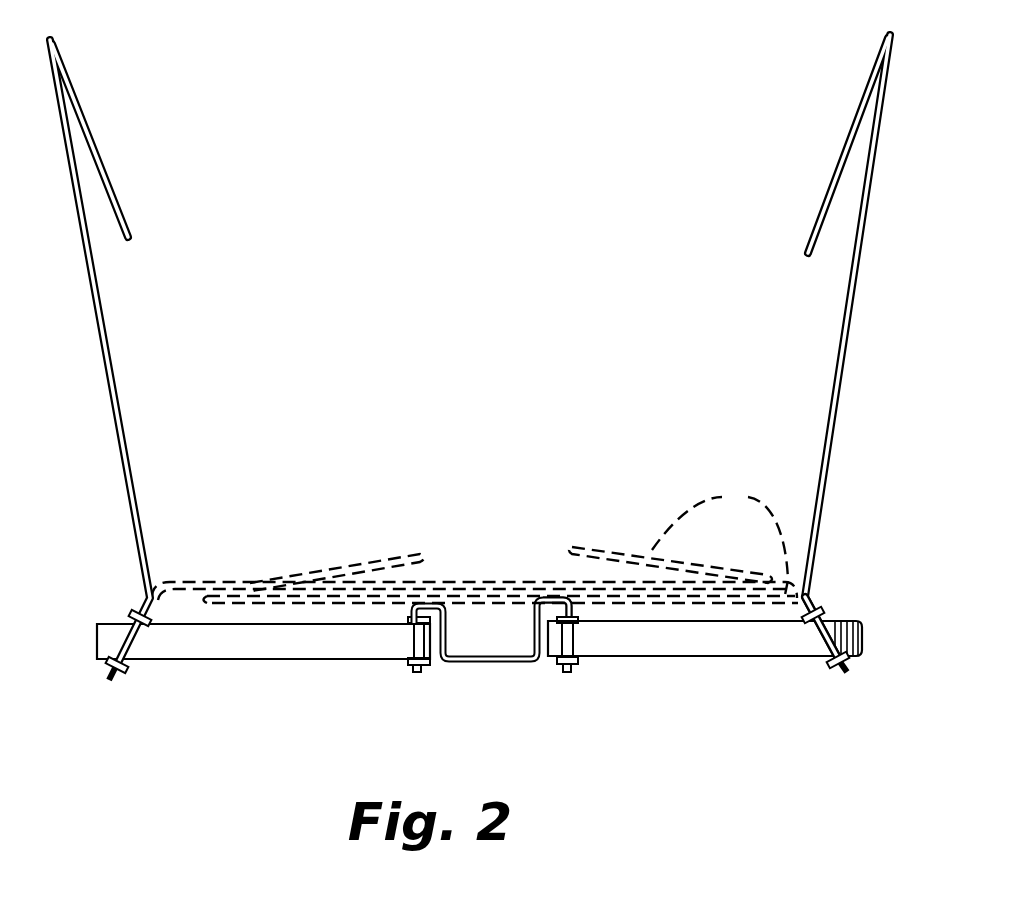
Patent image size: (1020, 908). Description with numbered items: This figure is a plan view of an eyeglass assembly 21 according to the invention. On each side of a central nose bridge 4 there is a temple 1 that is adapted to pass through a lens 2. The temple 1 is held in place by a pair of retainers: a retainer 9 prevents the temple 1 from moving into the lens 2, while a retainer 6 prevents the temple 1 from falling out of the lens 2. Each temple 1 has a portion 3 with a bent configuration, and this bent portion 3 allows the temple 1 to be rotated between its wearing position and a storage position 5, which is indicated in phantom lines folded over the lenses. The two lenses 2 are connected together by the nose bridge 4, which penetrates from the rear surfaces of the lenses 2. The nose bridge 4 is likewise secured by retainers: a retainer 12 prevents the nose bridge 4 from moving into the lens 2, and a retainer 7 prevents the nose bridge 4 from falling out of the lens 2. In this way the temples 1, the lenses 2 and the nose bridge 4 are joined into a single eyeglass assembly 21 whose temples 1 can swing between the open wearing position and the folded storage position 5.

The support arm assembly 21 is at (818, 121).
The temple 1 is at (798, 369).
The lens 2 is at (665, 648).
The portion with bent configuration 3 is at (805, 595).
The nose bridge 4 is at (509, 591).
The storage position 5 is at (475, 542).
The retainer 6 is at (832, 660).
The retainer 7 is at (572, 663).
The retainer 9 is at (826, 604).
The retainer 12 is at (578, 617).